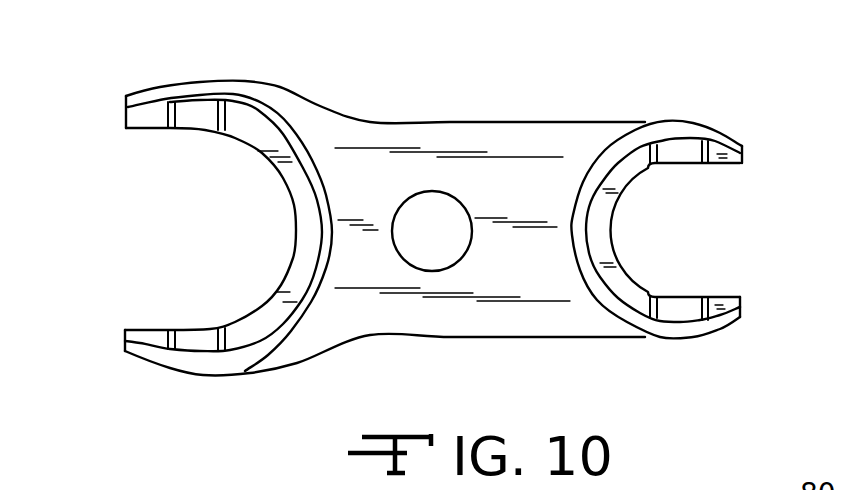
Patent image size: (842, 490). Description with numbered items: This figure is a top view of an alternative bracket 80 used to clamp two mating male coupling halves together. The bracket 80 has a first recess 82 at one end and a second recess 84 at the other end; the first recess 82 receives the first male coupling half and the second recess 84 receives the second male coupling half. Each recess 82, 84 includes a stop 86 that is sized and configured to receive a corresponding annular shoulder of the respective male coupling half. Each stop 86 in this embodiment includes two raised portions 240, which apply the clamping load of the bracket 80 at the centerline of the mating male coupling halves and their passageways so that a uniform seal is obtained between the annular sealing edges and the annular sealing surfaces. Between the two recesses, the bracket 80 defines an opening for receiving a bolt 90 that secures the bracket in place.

The bracket 80 is at (712, 117).
The first recess 82 is at (628, 157).
The second recess 84 is at (234, 113).
The stop 86 is at (149, 122).
The bolt 90 is at (412, 203).
The raised portion 240 is at (197, 120).